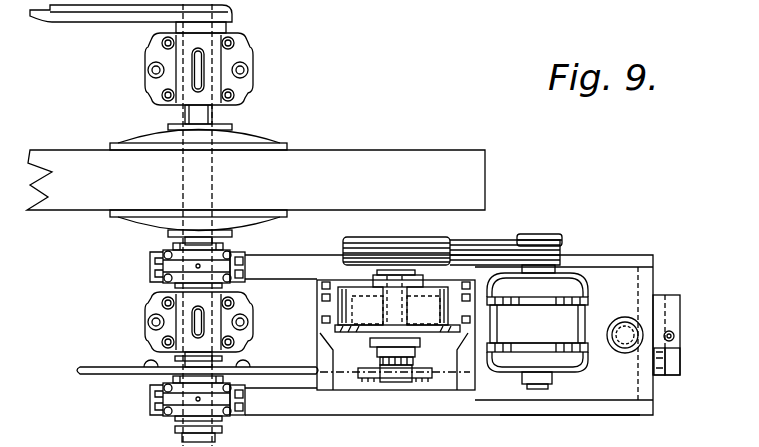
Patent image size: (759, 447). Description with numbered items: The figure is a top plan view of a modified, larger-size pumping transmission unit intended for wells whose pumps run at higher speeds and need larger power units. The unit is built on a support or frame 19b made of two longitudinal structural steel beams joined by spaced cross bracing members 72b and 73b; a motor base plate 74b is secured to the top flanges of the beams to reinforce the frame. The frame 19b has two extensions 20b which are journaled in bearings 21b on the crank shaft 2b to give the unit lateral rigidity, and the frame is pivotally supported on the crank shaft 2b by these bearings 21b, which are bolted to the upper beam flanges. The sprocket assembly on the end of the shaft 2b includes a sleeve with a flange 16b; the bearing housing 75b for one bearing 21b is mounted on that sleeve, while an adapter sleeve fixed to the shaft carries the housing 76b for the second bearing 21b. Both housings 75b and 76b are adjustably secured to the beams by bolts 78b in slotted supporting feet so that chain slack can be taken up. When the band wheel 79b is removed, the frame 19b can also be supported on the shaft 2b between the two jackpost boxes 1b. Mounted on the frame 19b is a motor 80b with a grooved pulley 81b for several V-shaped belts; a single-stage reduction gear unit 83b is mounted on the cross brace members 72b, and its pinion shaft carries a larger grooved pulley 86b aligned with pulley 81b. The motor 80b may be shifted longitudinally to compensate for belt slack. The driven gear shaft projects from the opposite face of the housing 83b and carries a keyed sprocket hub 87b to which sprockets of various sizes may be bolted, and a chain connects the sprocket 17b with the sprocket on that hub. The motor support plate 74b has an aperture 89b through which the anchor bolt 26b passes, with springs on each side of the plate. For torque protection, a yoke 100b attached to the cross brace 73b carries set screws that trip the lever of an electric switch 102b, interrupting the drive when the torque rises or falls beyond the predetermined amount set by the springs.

The jackpost box 1b is at (246, 65).
The crank shaft 2b is at (206, 117).
The band wheel 79b is at (368, 160).
The bearing housing 76b is at (222, 258).
The bearing 21b is at (150, 266).
The bolt 78b is at (241, 284).
The extension 20b is at (284, 262).
The flange 16b is at (147, 363).
The sprocket 17b is at (92, 364).
The bearing housing 75b is at (222, 419).
The frame 19b is at (613, 258).
The cross bracing member 73b is at (648, 278).
The motor base plate 74b is at (606, 392).
The reduction gear unit 83b is at (334, 311).
The cross brace member 72b is at (328, 385).
The pulley 86b is at (433, 238).
The sprocket hub 87b is at (500, 240).
The pulley 81b is at (548, 235).
The motor 80b is at (584, 299).
The anchor bolt 26b is at (624, 331).
The aperture 89b is at (623, 345).
The electric switch 102b is at (681, 361).
The yoke 100b is at (656, 374).